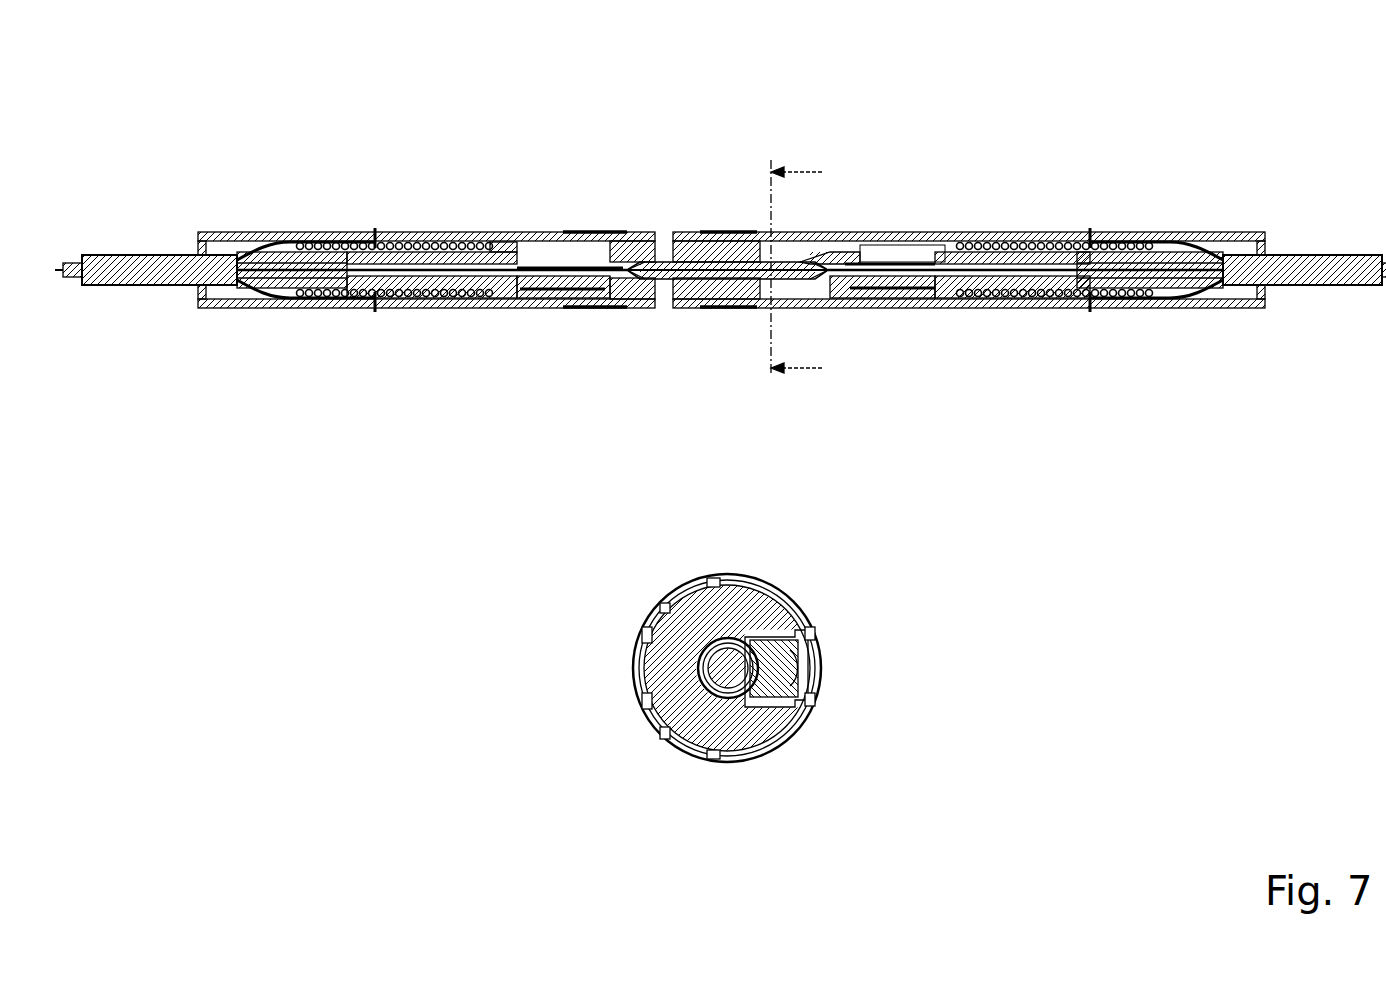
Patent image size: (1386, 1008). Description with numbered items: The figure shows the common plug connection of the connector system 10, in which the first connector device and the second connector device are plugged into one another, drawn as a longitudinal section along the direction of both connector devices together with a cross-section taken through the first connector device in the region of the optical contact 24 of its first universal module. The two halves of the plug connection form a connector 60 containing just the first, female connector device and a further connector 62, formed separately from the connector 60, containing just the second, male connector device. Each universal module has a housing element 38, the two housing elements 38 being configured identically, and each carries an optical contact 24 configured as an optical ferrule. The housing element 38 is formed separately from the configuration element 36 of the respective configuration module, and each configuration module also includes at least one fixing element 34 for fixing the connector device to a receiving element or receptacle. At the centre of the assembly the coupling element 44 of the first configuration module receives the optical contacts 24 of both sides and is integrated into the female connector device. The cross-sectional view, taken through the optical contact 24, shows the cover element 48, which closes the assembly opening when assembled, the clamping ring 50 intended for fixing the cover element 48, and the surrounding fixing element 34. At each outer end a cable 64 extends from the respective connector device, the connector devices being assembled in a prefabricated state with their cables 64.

The connector system 10 is at (793, 122).
The optical contact 24 is at (662, 230).
The fixing element 34 is at (578, 230).
The configuration element 36 is at (647, 308).
The housing element 38 is at (380, 308).
The coupling element 44 is at (763, 290).
The cover element 48 is at (782, 665).
The clamping ring 50 is at (815, 628).
The connector 60 is at (982, 318).
The connector 62 is at (440, 325).
The cable 64 is at (148, 262).